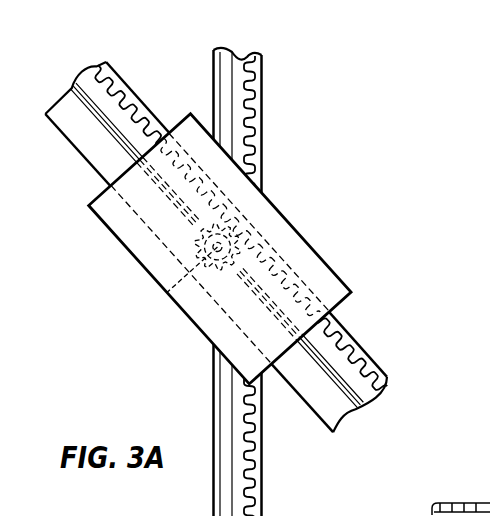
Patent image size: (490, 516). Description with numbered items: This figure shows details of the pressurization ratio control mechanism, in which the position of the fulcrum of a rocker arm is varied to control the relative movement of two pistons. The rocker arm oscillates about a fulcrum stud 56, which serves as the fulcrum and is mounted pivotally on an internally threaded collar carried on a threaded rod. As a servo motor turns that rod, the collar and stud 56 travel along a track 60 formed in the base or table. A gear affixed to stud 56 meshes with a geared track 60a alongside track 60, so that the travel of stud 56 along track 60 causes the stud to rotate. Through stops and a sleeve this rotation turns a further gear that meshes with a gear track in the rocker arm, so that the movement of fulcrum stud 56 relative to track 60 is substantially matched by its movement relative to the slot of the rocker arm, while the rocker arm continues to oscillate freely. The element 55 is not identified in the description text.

The carriage plate 55 is at (242, 229).
The fulcrum stud 56 is at (167, 298).
The track 60 is at (218, 380).
The geared track 60a is at (231, 57).